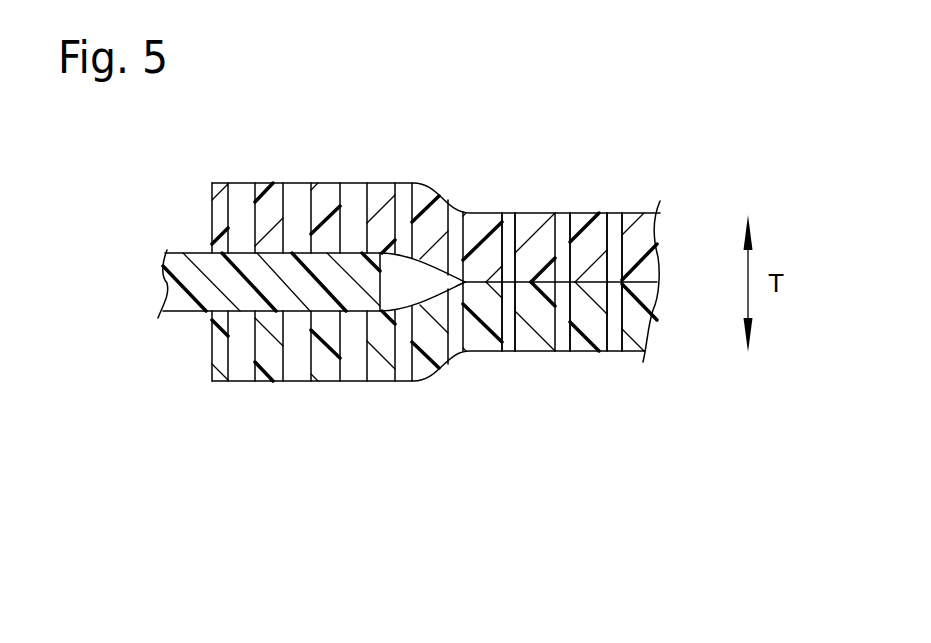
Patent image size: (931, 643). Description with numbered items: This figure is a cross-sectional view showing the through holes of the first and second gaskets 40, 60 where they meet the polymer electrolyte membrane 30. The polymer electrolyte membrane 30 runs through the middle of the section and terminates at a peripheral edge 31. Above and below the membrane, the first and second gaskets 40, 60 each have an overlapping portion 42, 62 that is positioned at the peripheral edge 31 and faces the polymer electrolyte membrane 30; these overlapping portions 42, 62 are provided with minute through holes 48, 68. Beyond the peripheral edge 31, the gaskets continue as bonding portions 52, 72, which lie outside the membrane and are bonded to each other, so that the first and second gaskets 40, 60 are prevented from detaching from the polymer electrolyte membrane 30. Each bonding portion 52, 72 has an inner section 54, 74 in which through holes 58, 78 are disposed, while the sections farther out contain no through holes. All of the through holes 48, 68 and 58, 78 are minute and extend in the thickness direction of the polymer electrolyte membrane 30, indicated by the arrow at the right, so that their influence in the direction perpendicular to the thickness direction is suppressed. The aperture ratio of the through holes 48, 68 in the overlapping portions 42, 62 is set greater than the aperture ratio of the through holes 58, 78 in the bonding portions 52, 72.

The polymer electrolyte membrane 30 is at (193, 287).
The peripheral edge 31 is at (369, 286).
The first gasket 40 is at (442, 140).
The overlapping portion 42 is at (268, 182).
The through hole 48 is at (363, 230).
The bonding portion 52 is at (591, 213).
The inner section 54 is at (639, 216).
The through hole 58 is at (513, 238).
The second gasket 60 is at (445, 428).
The overlapping portion 62 is at (270, 382).
The through hole 68 is at (366, 357).
The bonding portion 72 is at (590, 352).
The inner section 74 is at (635, 352).
The through hole 78 is at (509, 352).